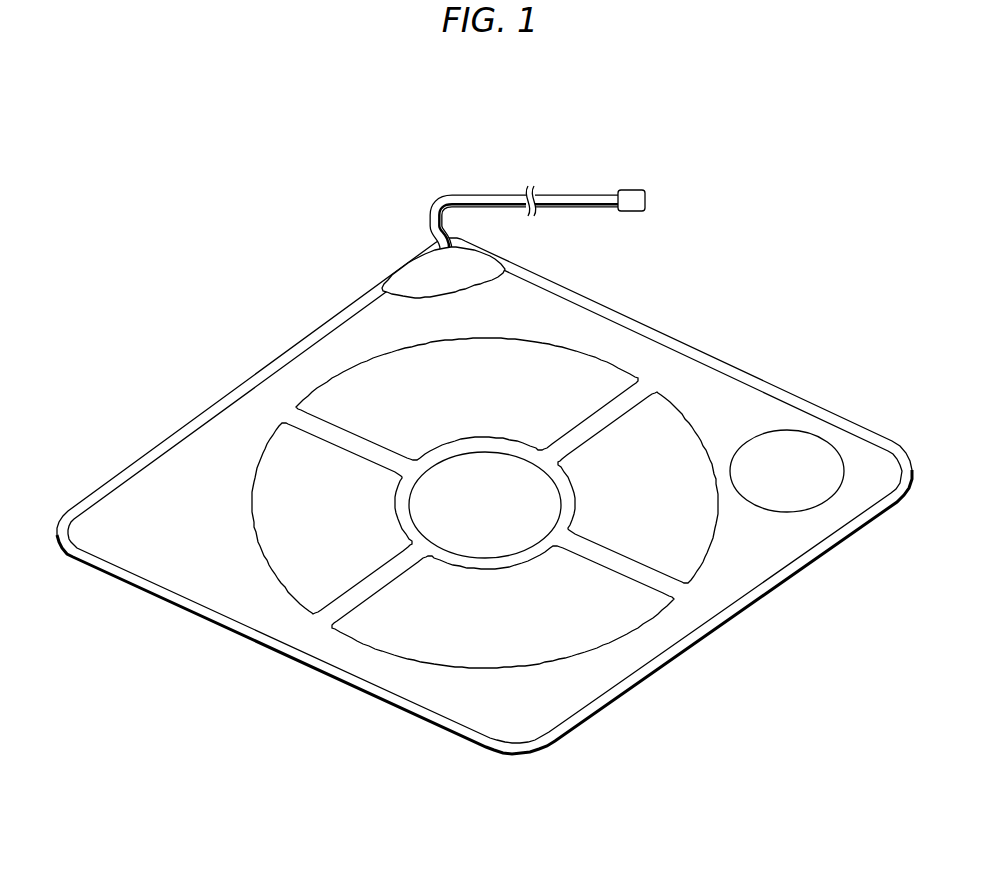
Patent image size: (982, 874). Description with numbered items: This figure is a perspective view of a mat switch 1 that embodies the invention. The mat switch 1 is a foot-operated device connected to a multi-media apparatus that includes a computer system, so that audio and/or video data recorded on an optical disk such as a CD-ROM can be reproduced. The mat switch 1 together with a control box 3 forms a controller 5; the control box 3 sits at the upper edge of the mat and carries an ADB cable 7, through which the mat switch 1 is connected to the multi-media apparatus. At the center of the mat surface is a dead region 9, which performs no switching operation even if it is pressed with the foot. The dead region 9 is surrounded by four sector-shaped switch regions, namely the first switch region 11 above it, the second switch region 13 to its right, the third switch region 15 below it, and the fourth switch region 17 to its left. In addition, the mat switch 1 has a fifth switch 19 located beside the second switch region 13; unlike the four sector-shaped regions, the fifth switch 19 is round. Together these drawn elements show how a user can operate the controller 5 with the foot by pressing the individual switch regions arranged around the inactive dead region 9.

The mat switch 1 is at (730, 588).
The control box 3 is at (493, 254).
The controller 5 is at (799, 346).
The ADB cable 7 is at (575, 194).
The dead region 9 is at (492, 490).
The first switch region 11 is at (449, 422).
The second switch region 13 is at (639, 517).
The third switch region 15 is at (487, 640).
The fourth switch region 17 is at (310, 547).
The fifth switch 19 is at (774, 500).